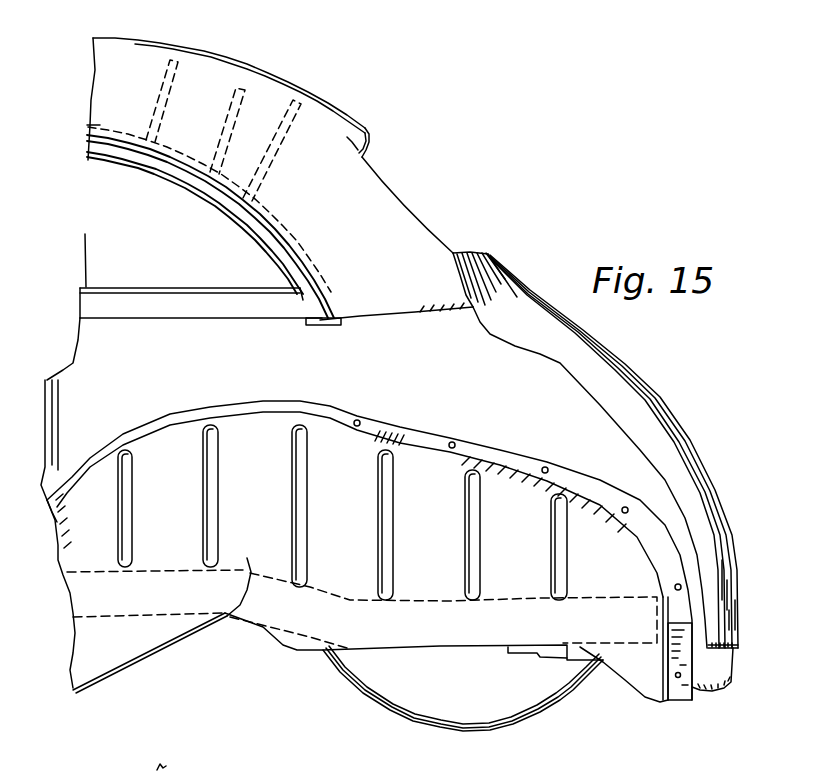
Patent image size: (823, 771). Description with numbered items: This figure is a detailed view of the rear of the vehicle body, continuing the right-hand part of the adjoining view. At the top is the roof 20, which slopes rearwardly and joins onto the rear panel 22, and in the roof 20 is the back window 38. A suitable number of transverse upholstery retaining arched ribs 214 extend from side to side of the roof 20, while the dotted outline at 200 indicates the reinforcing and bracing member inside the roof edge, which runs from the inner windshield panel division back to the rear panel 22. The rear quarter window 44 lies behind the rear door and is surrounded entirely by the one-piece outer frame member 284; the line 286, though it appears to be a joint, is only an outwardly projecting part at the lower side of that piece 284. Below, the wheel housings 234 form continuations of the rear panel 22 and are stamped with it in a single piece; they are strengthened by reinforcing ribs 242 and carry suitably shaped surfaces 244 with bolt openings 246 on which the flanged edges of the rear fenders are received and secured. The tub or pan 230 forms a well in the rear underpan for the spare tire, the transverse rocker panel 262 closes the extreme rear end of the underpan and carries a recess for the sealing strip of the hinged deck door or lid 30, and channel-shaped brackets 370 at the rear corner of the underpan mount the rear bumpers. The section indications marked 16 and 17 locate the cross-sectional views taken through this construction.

The roof 20 is at (130, 60).
The transverse upholstery retaining arched ribs 214 is at (240, 92).
The rear quarter window 44 is at (224, 200).
The back window 38 is at (417, 213).
The outer frame member 284 is at (84, 425).
The line 286 is at (300, 294).
The dotted outline of reinforcing member 200 is at (318, 330).
The rear panel 22 is at (480, 331).
The hinged door or lid 30 is at (643, 410).
The shaped surfaces 244 is at (407, 425).
The bolt openings 246 is at (455, 440).
The reinforcing ribs 242 is at (470, 572).
The wheel housings 234 is at (226, 612).
The tub or pan 230 is at (370, 687).
The brackets 370 is at (647, 677).
The transverse rocker panel 262 is at (718, 674).
The molding 16 is at (205, 260).
The section line 17- 17 is at (403, 260).